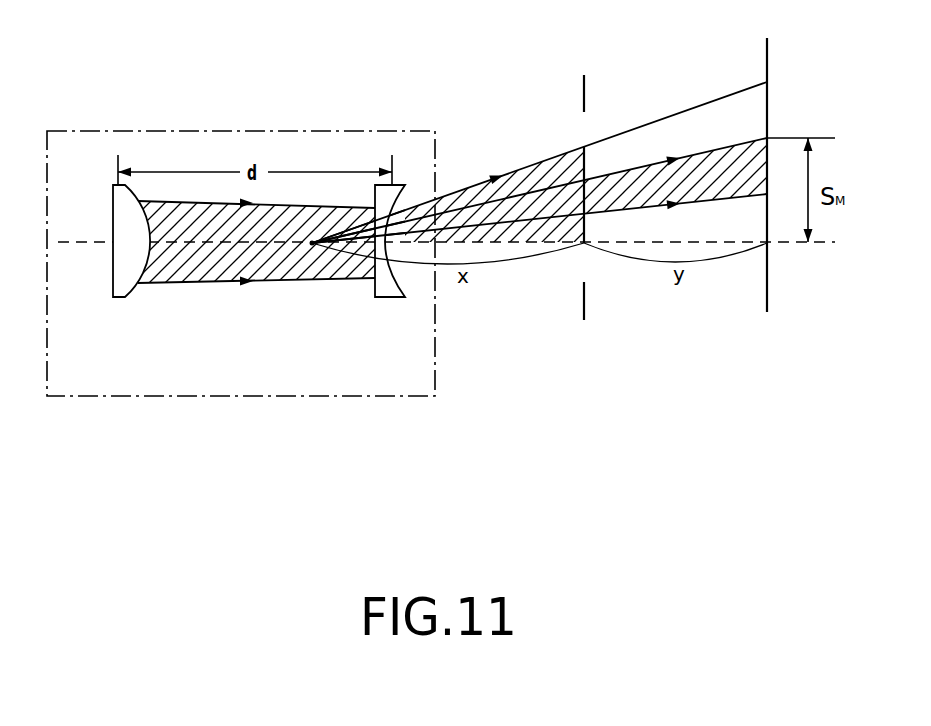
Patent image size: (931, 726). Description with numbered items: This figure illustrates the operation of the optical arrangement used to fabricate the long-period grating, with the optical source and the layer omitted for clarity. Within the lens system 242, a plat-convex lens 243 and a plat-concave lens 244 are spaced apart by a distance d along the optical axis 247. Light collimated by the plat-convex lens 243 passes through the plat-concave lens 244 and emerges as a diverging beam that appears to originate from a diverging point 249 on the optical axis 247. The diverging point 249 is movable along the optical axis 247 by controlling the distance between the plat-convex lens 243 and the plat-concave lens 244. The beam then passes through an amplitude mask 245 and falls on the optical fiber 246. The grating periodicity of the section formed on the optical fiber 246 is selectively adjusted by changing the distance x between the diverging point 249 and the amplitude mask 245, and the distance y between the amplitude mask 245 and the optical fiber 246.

The lens system 242 is at (227, 131).
The plat-convex lens 243 is at (122, 292).
The plat-concave lens 244 is at (392, 298).
The amplitude mask 245 is at (584, 320).
The optical fiber 246 is at (767, 312).
The optical axis 247 is at (215, 243).
The diverging point 249 is at (311, 246).